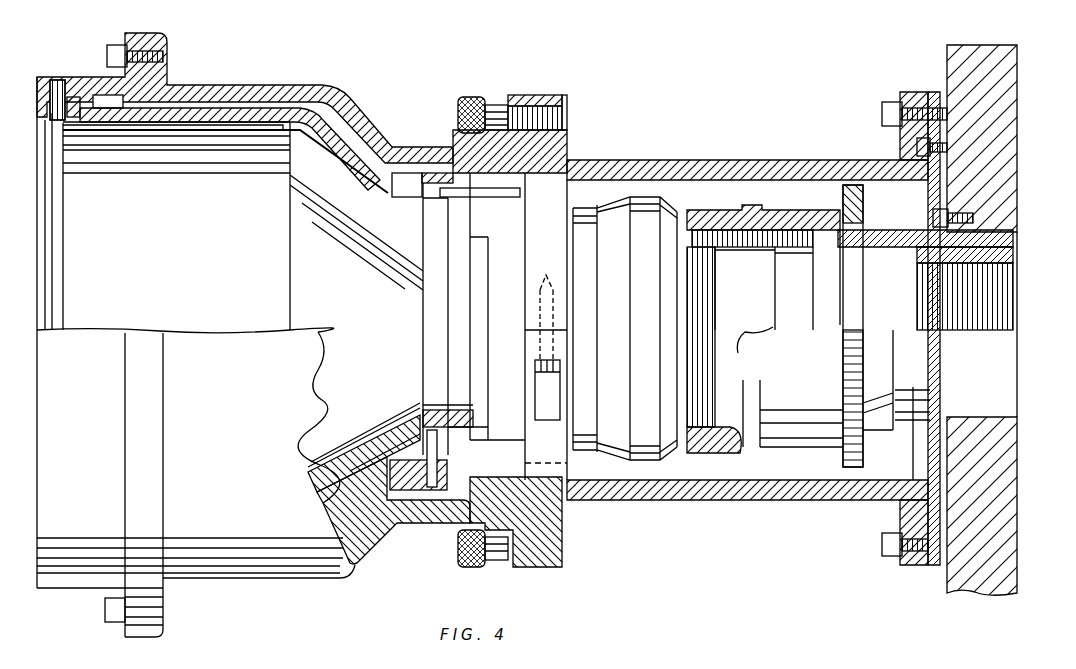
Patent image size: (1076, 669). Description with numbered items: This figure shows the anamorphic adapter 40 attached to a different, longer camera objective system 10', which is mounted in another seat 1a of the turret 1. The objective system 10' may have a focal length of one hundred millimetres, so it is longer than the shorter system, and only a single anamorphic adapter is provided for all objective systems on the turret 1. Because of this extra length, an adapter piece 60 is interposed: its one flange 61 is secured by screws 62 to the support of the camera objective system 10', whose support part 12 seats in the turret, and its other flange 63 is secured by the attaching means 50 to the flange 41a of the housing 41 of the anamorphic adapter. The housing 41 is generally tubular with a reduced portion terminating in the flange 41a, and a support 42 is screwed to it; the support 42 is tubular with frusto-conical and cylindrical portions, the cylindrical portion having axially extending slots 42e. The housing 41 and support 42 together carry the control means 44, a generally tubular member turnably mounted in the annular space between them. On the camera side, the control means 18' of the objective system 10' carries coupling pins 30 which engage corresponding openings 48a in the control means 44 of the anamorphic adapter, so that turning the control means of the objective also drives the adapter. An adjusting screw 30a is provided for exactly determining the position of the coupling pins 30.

The turret 1 is at (1016, 120).
The seat 1a is at (1017, 240).
The camera objective system 10' is at (751, 332).
The support part 12 is at (37, 100).
The control means 18' is at (569, 308).
The coupling pins 30 is at (495, 195).
The adjusting screw 30a is at (557, 370).
The anamorphic adapter 40 is at (325, 210).
The housing 41 is at (200, 93).
The flange 41a is at (523, 100).
The support 42 is at (392, 217).
The axially extending slots 42e is at (213, 133).
The control means 44 is at (265, 108).
The openings 48a is at (430, 190).
The attaching means 50 is at (472, 97).
The adapter piece 60 is at (720, 167).
The flange 61 is at (925, 72).
The screws 62 is at (882, 112).
The flange 63 is at (556, 97).